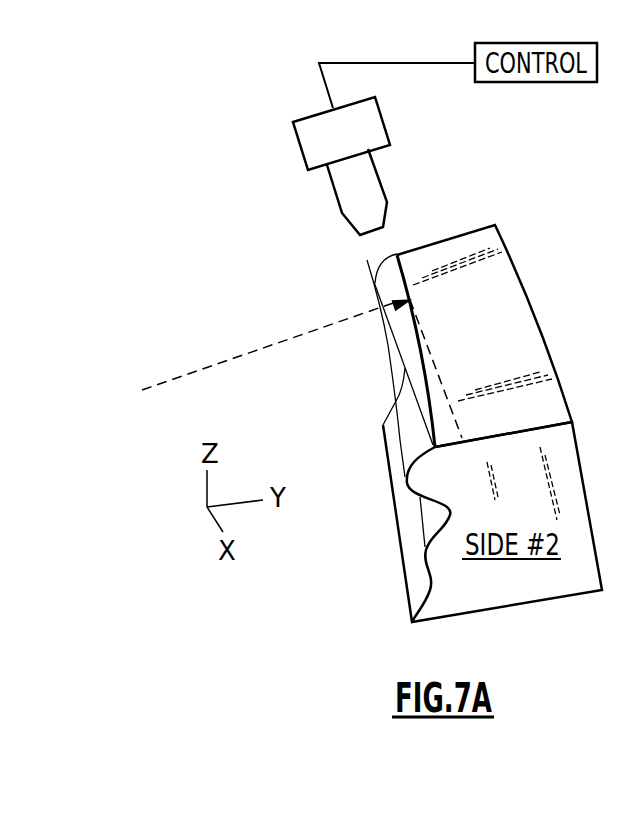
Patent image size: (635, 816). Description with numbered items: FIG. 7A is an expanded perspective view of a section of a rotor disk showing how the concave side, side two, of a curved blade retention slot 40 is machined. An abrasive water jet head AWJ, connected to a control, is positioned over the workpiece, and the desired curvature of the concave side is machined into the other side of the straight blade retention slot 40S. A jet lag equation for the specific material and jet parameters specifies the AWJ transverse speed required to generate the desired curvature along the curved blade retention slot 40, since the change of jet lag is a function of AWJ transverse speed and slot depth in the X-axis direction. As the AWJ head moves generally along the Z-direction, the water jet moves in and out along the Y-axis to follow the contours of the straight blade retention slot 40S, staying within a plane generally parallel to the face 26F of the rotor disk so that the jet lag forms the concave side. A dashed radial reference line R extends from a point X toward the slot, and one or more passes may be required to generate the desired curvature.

The face 26F is at (462, 235).
The curved blade retention slot 40 is at (353, 357).
The straight blade retention slot 40S is at (366, 266).
The abrasive water jet AWJ is at (300, 147).
The radial line R is at (223, 363).